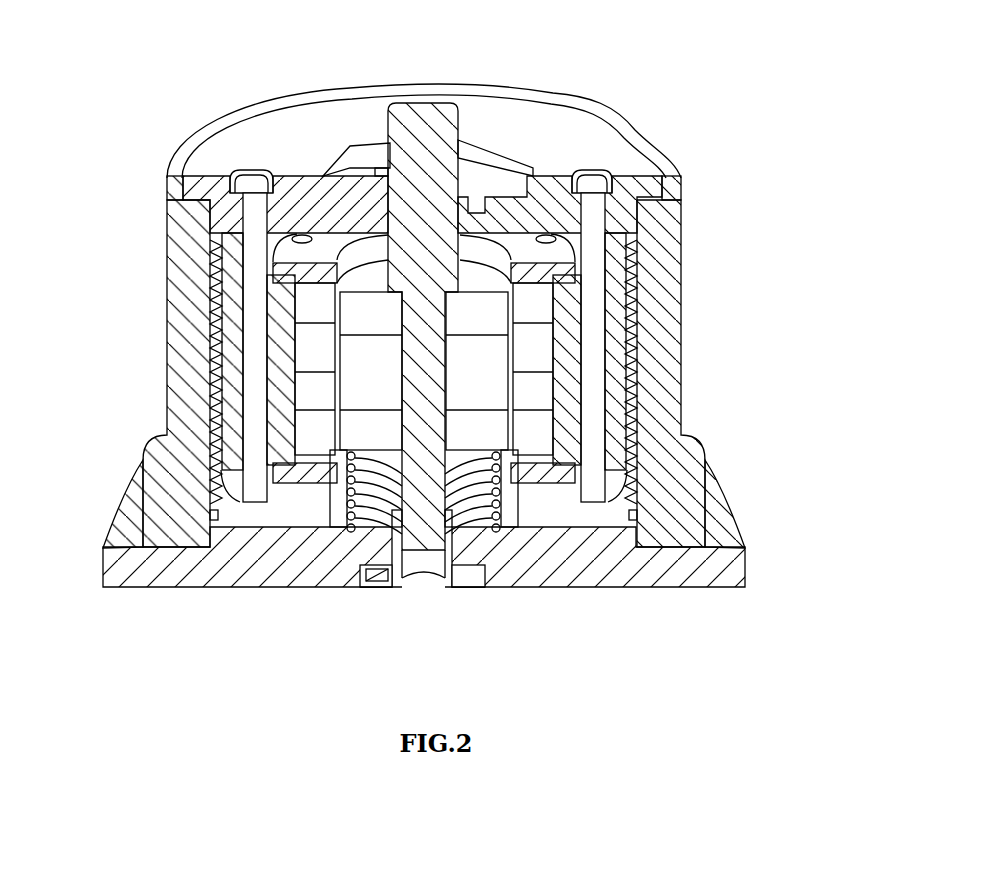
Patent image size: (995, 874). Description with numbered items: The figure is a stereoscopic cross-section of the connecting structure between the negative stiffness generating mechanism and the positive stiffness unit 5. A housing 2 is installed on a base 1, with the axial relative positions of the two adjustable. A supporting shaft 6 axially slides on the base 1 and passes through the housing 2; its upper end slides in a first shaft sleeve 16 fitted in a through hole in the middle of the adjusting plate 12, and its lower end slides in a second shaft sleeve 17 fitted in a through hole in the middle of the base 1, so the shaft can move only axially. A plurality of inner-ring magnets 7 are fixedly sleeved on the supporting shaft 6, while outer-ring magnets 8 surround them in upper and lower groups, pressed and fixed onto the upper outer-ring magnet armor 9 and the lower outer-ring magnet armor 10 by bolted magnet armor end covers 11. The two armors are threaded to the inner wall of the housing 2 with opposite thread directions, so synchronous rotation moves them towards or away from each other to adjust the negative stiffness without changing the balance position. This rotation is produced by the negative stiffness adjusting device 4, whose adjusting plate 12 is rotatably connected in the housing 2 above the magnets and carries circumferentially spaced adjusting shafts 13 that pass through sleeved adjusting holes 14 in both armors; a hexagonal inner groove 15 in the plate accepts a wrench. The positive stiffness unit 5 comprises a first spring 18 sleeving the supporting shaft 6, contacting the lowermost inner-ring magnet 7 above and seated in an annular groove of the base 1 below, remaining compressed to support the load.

The base 1 is at (207, 565).
The housing 2 is at (188, 490).
The negative stiffness adjusting device 4 is at (598, 126).
The positive stiffness unit 5 is at (514, 508).
The supporting shaft 6 is at (425, 150).
The inner-ring magnet 7 is at (490, 397).
The outer-ring magnet 8 is at (530, 340).
The upper outer-ring magnet armor 9 is at (575, 300).
The lower outer-ring magnet armor 10 is at (562, 435).
The magnet armor end cover 11 is at (530, 256).
The adjusting plate 12 is at (215, 190).
The adjusting shaft 13 is at (255, 295).
The adjusting hole 14 is at (210, 332).
The hexagonal inner groove 15 is at (348, 188).
The first shaft sleeve 16 is at (350, 181).
The second shaft sleeve 17 is at (380, 566).
The first spring 18 is at (343, 527).